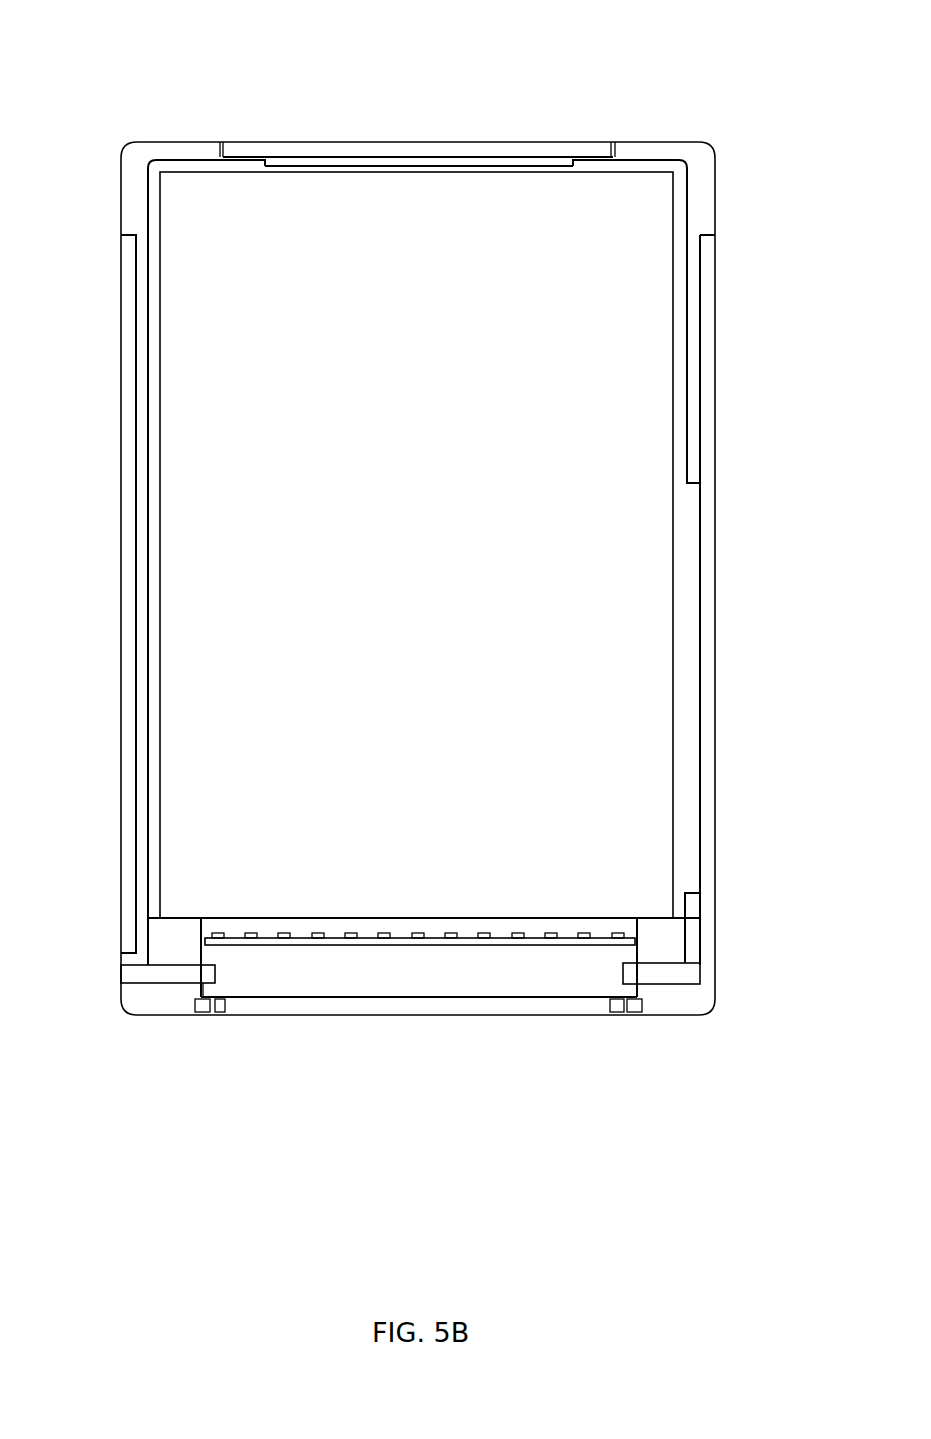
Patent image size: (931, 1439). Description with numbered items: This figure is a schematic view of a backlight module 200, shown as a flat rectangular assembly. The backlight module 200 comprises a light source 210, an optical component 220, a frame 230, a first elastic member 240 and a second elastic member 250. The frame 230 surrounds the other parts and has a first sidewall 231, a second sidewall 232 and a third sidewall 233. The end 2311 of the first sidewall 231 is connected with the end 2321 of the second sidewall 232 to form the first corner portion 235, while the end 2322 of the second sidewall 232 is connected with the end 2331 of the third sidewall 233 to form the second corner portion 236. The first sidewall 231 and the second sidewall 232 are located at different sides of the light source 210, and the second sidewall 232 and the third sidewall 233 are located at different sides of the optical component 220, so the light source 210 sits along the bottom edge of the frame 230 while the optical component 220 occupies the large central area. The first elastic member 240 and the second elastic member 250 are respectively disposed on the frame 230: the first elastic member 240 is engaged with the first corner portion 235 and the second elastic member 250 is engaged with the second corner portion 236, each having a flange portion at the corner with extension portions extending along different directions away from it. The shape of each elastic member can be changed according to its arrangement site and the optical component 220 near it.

The backlight module 200 is at (152, 32).
The light source 210 is at (300, 940).
The optical component 220 is at (655, 822).
The frame 230 is at (117, 702).
The first sidewall 231 is at (556, 1020).
The end of the first sidewall 2311 is at (637, 1016).
The second sidewall 232 is at (708, 916).
The end of the second sidewall 2321 is at (708, 950).
The end of the second sidewall 2322 is at (710, 244).
The third sidewall 233 is at (566, 152).
The end of the third sidewall 2331 is at (614, 152).
The first corner portion 235 is at (707, 1030).
The second corner portion 236 is at (707, 125).
The first elastic member 240 is at (706, 986).
The second elastic member 250 is at (706, 170).